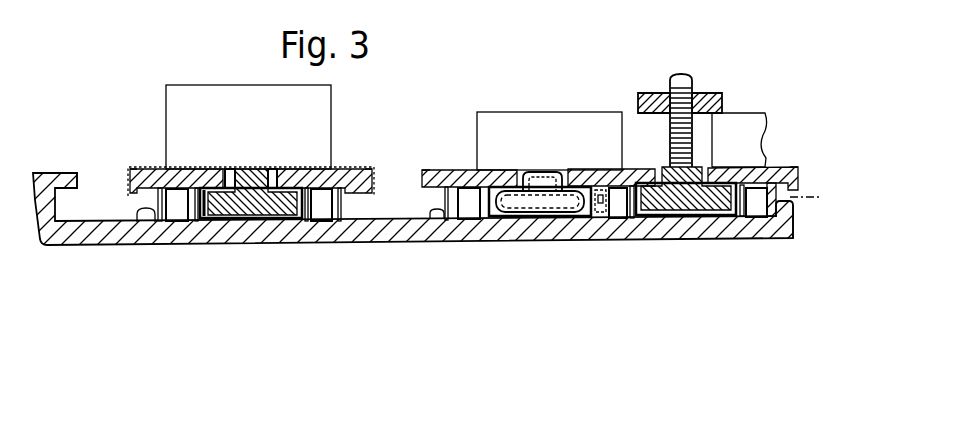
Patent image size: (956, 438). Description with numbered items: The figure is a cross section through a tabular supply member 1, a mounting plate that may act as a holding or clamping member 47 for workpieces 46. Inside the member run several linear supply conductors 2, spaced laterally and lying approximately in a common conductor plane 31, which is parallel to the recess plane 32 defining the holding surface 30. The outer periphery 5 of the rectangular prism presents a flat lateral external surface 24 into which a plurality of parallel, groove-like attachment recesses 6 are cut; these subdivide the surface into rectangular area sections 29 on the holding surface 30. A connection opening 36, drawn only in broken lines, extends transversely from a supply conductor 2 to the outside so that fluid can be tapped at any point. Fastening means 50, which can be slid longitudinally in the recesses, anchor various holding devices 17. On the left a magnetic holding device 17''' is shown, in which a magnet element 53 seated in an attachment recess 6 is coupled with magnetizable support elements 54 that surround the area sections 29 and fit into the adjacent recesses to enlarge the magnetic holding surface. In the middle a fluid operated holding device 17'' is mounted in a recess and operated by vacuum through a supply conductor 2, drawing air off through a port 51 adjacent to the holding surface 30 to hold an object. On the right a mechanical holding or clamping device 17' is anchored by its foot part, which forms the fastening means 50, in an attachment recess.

The supply member 1 is at (753, 240).
The supply conductor 2 is at (178, 214).
The outer periphery 5 is at (778, 168).
The attachment recess 6 is at (143, 223).
The holding device 17 is at (489, 236).
The mechanical holding or clamping device 17' is at (680, 86).
The fluid operated holding device 17'' is at (540, 137).
The magnetic holding device 17''' is at (251, 151).
The lateral external surface 24 is at (441, 169).
The area section 29 is at (47, 172).
The holding surface 30 is at (63, 172).
The conductor plane 31 is at (792, 208).
The recess plane 32 is at (806, 246).
The connection opening 36 is at (590, 213).
The workpiece 46 is at (186, 96).
The holding or clamping member 47 is at (47, 243).
The fastening means 50 is at (286, 214).
The port 51 is at (546, 180).
The magnet element 53 is at (261, 171).
The magnetizable support element 54 is at (138, 171).